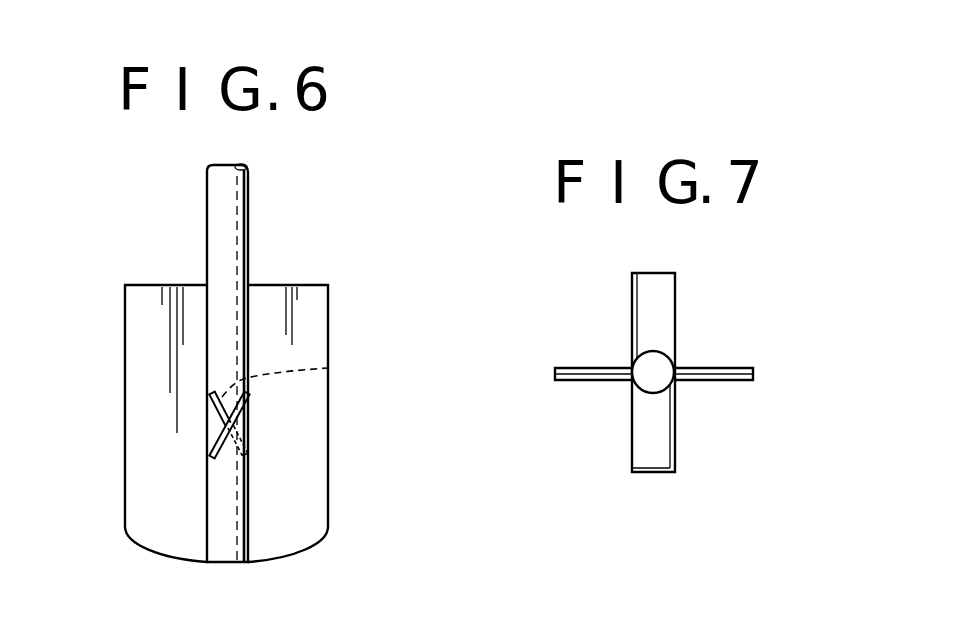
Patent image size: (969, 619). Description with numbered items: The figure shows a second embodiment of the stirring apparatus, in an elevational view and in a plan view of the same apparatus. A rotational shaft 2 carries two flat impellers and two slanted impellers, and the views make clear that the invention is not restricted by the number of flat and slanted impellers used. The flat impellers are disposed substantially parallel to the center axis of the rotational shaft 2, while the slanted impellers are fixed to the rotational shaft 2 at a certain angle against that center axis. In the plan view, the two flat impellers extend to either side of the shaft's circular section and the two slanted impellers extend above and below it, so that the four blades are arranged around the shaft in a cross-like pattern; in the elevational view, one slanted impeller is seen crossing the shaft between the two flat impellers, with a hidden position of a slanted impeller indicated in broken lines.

In FIG. 6, the rotational shaft 2 is at (240, 212).
In FIG. 7, the rotational shaft 2 is at (658, 350).